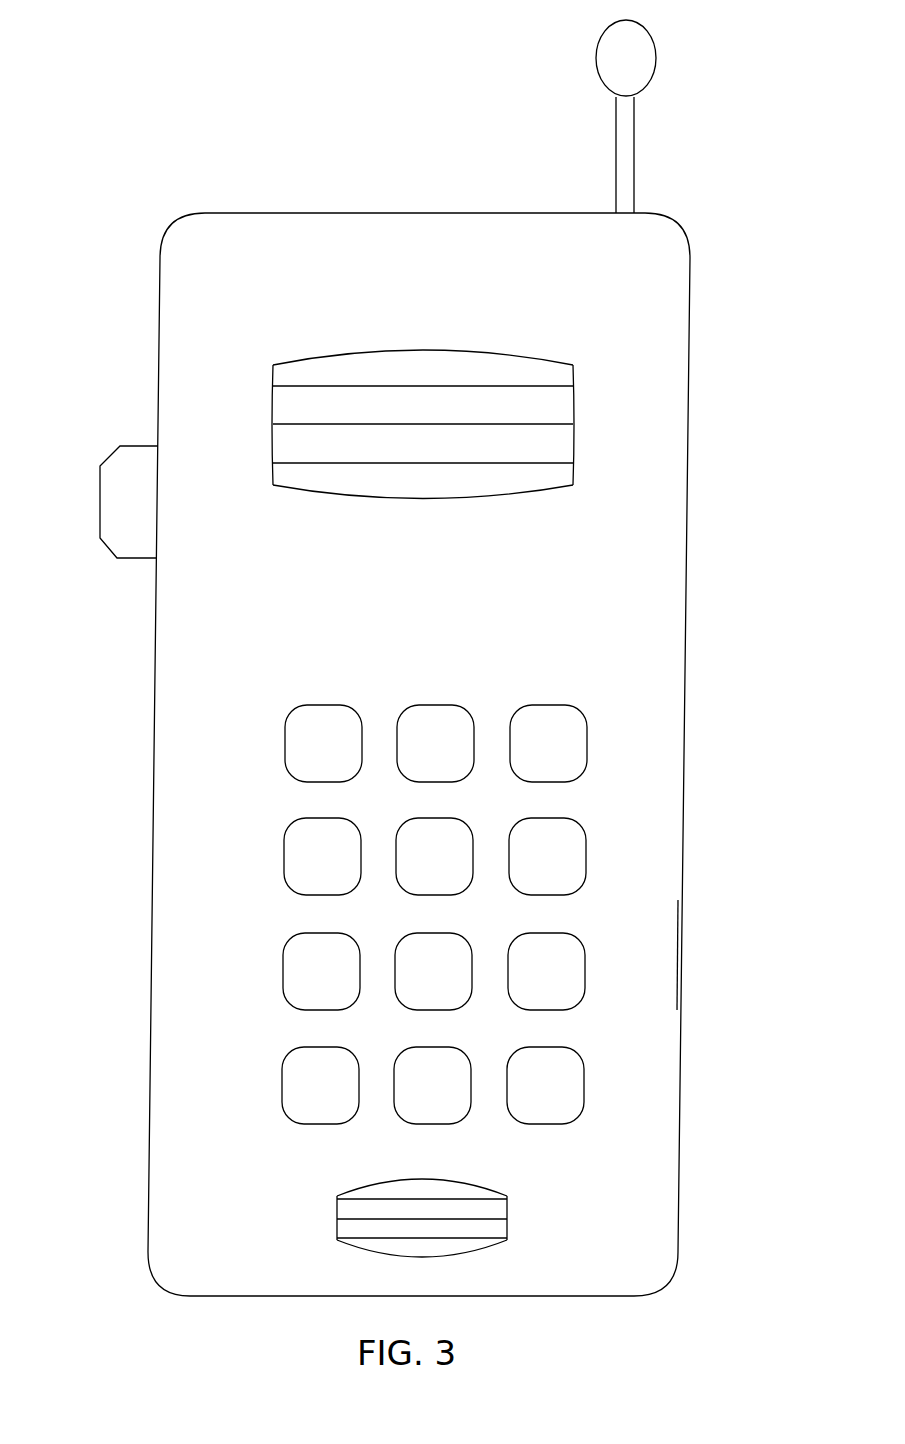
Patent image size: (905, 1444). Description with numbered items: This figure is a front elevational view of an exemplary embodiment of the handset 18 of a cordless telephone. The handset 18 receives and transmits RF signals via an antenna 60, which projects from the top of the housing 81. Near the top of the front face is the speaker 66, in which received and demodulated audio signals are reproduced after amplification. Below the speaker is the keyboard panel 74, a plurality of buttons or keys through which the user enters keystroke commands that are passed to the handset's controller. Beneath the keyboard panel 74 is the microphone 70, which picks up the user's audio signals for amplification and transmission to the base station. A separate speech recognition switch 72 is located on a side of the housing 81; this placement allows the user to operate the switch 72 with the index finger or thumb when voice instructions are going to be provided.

The handset 18 is at (143, 236).
The antenna 60 is at (614, 135).
The speaker 66 is at (573, 363).
The speech recognition switch 72 is at (100, 485).
The keyboard panel 74 is at (623, 702).
The housing 81 is at (678, 998).
The microphone 70 is at (507, 1218).